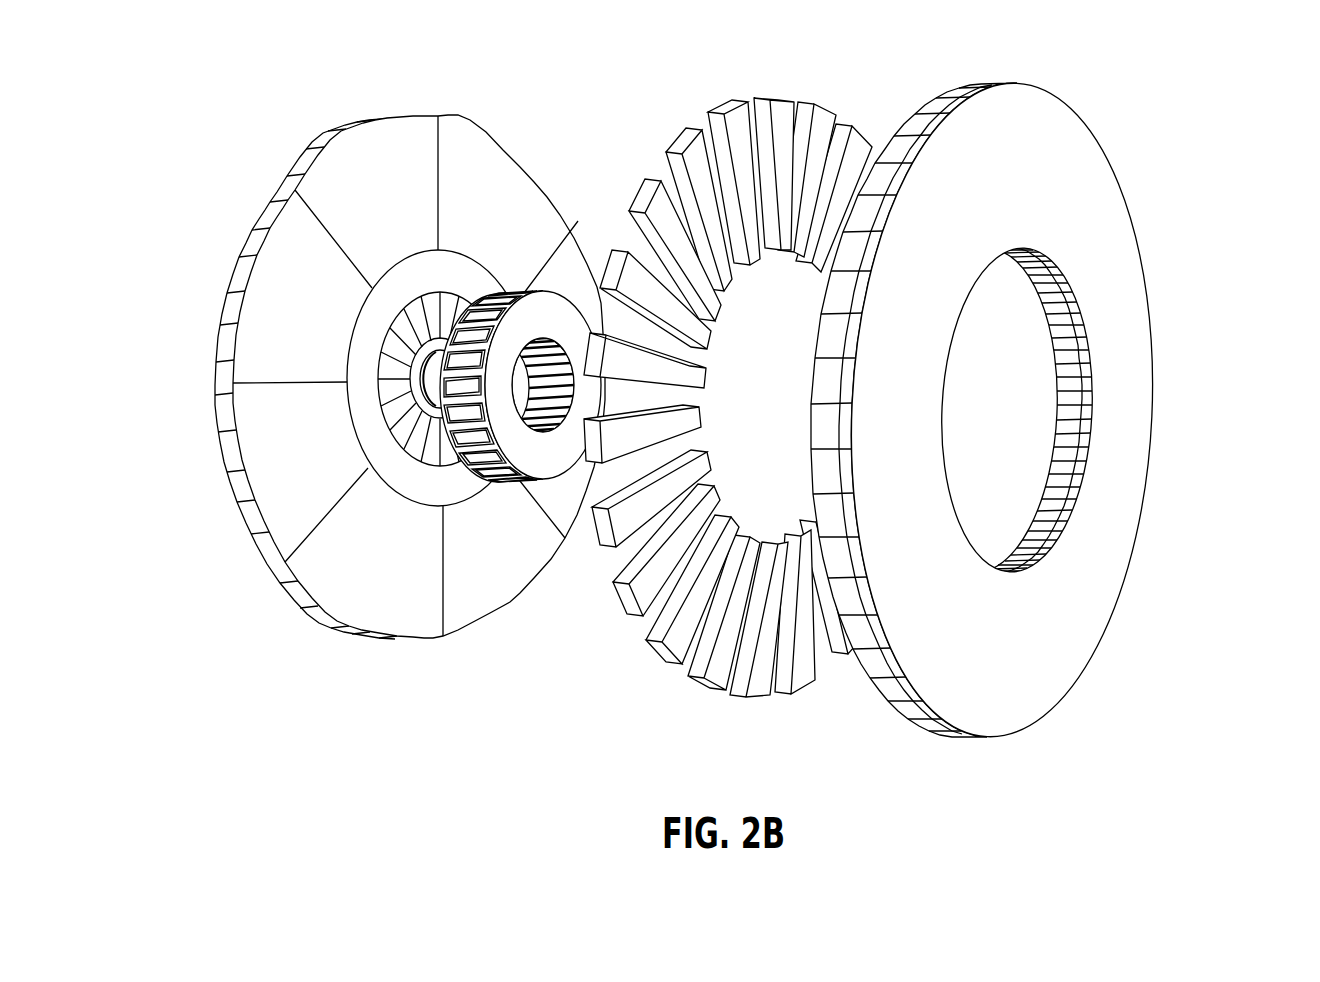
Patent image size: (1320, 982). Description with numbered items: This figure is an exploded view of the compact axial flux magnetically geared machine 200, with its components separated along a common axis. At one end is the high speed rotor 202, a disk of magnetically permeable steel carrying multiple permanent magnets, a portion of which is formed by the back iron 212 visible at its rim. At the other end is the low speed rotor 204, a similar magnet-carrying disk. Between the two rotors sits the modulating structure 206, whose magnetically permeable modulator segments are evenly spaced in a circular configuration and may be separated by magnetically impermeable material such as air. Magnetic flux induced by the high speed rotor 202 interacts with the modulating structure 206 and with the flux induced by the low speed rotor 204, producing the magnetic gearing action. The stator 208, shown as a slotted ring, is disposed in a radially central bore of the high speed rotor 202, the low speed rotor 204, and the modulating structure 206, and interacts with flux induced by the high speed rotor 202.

The compact axial flux magnetically geared machine 200 is at (718, 387).
The high speed rotor 202 is at (443, 643).
The low speed rotor 204 is at (1058, 113).
The modulating structure 206 is at (765, 681).
The stator 208 is at (544, 310).
The back iron 212 is at (222, 345).